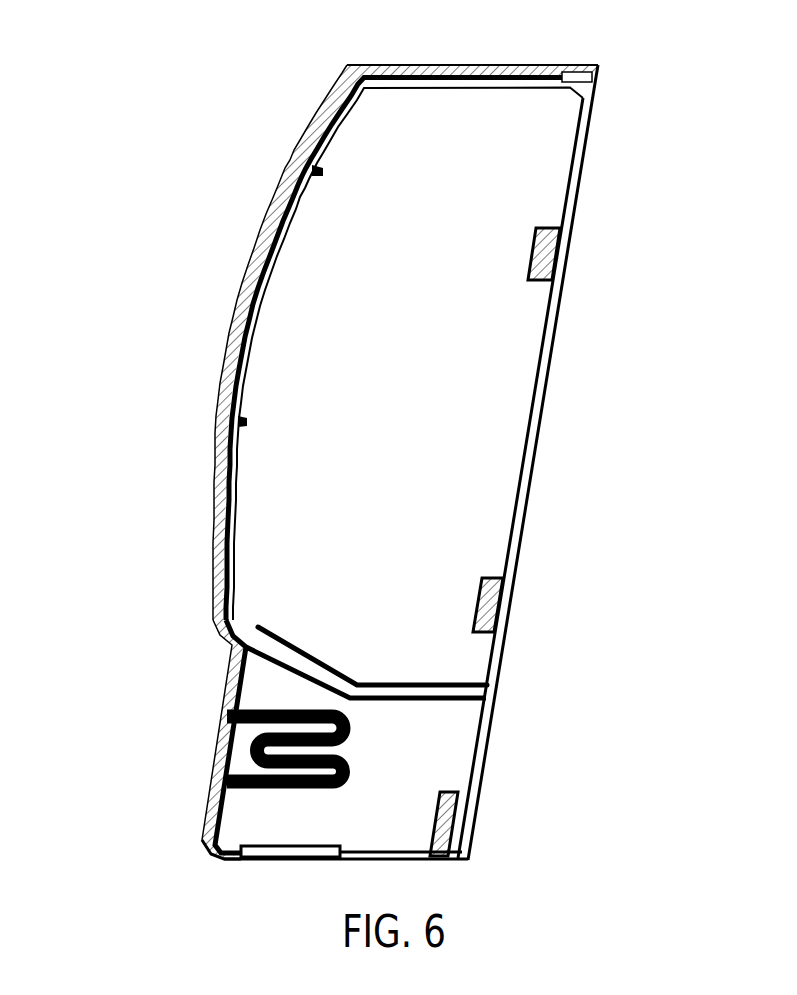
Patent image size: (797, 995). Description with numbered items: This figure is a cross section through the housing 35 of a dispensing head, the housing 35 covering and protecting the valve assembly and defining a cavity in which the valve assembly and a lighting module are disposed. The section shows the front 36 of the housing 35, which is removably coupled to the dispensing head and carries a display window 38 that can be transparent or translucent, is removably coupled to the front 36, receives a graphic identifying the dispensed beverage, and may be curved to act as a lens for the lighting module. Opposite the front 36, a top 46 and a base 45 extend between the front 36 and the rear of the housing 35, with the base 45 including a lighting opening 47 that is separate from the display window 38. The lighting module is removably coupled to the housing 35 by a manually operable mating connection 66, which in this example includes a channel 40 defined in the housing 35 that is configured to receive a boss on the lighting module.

The housing 35 is at (120, 210).
The front 36 is at (327, 100).
The display window 38 is at (231, 333).
The channel 40 is at (358, 747).
The base 45 is at (233, 861).
The top 46 is at (427, 63).
The lighting opening 47 is at (290, 853).
The mating connection 66 is at (200, 757).